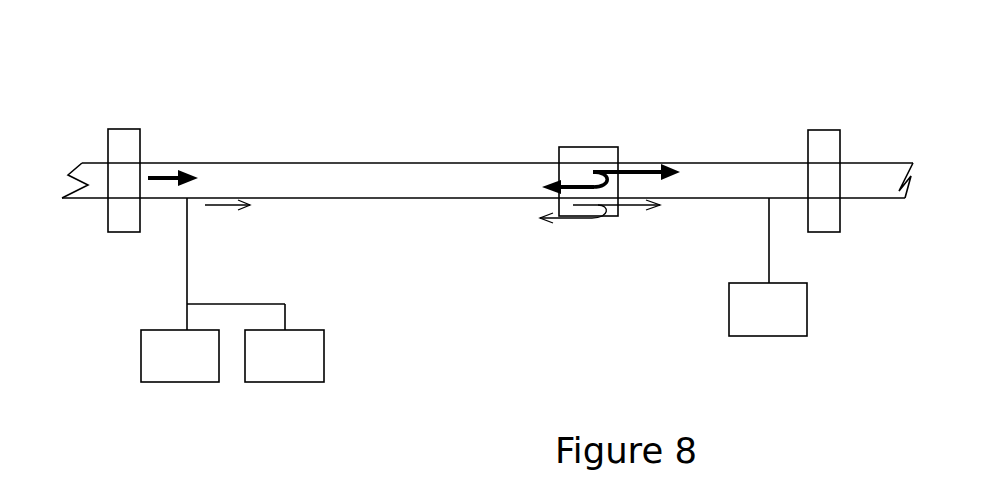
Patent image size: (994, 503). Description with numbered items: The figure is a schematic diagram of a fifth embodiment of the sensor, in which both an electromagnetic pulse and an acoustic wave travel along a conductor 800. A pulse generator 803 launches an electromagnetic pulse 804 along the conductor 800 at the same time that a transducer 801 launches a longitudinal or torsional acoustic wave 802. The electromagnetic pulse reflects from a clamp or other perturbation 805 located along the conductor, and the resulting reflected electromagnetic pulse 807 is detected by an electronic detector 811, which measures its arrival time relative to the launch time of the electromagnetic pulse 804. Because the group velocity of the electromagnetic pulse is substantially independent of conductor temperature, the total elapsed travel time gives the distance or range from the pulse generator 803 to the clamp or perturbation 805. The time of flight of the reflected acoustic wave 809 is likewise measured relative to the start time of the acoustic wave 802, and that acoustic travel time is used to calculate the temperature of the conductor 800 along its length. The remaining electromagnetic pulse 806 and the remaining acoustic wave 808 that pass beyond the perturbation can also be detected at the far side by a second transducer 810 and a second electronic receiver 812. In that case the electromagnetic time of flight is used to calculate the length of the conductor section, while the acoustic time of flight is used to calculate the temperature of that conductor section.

The conductor 800 is at (90, 188).
The transducer 801 is at (122, 218).
The acoustic wave 802 is at (160, 177).
The pulse generator 803 is at (213, 290).
The electromagnetic pulse 804 is at (247, 243).
The clamp or other perturbation 805 is at (605, 153).
The remaining electromagnetic pulse 806 is at (632, 170).
The reflected electromagnetic pulse 807 is at (577, 182).
The acoustic wave 808 is at (632, 208).
The reflected acoustic wave 809 is at (553, 222).
The second transducer 810 is at (821, 213).
The electronic detector 811 is at (284, 343).
The second electronic receiver 812 is at (768, 267).